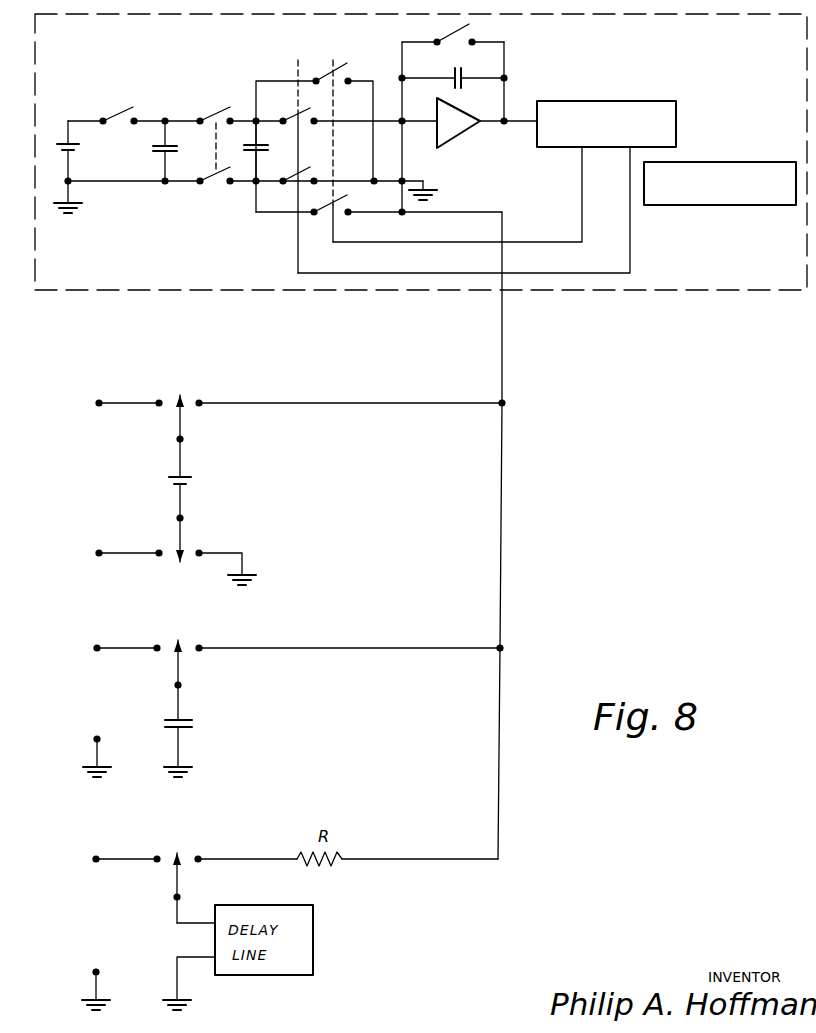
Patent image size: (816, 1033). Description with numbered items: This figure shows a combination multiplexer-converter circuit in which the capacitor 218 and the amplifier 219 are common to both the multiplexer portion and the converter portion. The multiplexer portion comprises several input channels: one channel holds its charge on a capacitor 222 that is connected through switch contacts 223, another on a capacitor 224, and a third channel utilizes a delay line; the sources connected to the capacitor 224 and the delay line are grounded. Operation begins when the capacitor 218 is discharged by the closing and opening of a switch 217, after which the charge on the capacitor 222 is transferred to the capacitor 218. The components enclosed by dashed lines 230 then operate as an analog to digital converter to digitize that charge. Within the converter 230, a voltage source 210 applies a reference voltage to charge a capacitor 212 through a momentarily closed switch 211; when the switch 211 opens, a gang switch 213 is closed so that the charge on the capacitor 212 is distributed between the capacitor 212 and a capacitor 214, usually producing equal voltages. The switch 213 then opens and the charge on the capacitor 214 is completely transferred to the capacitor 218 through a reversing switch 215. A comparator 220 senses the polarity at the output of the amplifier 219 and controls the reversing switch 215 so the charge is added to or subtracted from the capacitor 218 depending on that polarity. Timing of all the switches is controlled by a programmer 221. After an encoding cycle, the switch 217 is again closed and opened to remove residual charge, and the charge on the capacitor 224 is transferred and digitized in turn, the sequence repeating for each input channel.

The voltage source 210 is at (70, 148).
The switch 211 is at (114, 108).
The capacitor 212 is at (160, 156).
The gang switch 213 is at (215, 110).
The capacitor 214 is at (254, 153).
The reversing switch 215 is at (302, 105).
The switch 217 is at (448, 31).
The capacitor 218 is at (456, 71).
The amplifier 219 is at (467, 112).
The comparator 220 is at (628, 100).
The programmer 221 is at (721, 161).
The capacitor 222 is at (184, 480).
The switch contacts 223 is at (177, 423).
The capacitor 224 is at (184, 722).
The analog to digital converter 230 is at (697, 292).